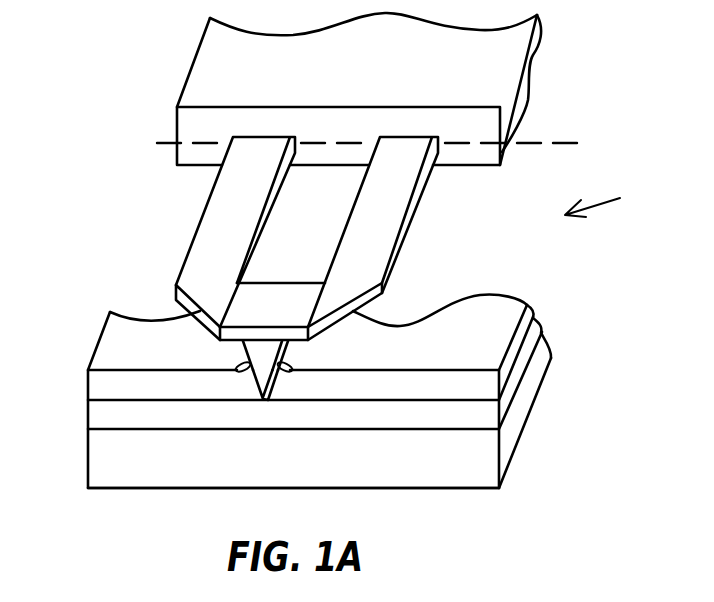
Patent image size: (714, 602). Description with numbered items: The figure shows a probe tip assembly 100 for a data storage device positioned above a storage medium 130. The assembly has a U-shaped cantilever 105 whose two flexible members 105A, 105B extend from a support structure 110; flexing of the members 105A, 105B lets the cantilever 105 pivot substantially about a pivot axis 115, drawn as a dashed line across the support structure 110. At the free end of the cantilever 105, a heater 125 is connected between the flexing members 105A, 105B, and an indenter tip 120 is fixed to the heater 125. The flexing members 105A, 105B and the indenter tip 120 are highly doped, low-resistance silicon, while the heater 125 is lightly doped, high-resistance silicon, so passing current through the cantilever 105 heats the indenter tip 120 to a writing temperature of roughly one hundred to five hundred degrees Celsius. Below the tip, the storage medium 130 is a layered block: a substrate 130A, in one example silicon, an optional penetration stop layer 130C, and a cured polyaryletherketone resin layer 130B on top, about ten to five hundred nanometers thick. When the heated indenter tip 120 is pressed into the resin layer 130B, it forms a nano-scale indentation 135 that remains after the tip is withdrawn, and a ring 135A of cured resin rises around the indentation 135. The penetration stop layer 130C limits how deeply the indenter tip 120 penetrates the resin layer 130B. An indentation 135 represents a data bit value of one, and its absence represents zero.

The tip assembly 100 is at (610, 203).
The U-shaped cantilever 105 is at (212, 197).
The flexible member 105A is at (250, 242).
The flexible member 105B is at (397, 242).
The support structure 110 is at (410, 95).
The pivot axis 115 is at (565, 147).
The indenter tip 120 is at (263, 357).
The heater 125 is at (280, 319).
The storage medium 130 is at (88, 413).
The substrate 130A is at (422, 476).
The cured polyaryletherketone resin layer 130B is at (485, 386).
The penetration stop layer 130C is at (485, 415).
The indentation 135 is at (274, 376).
The ring 135A is at (281, 362).